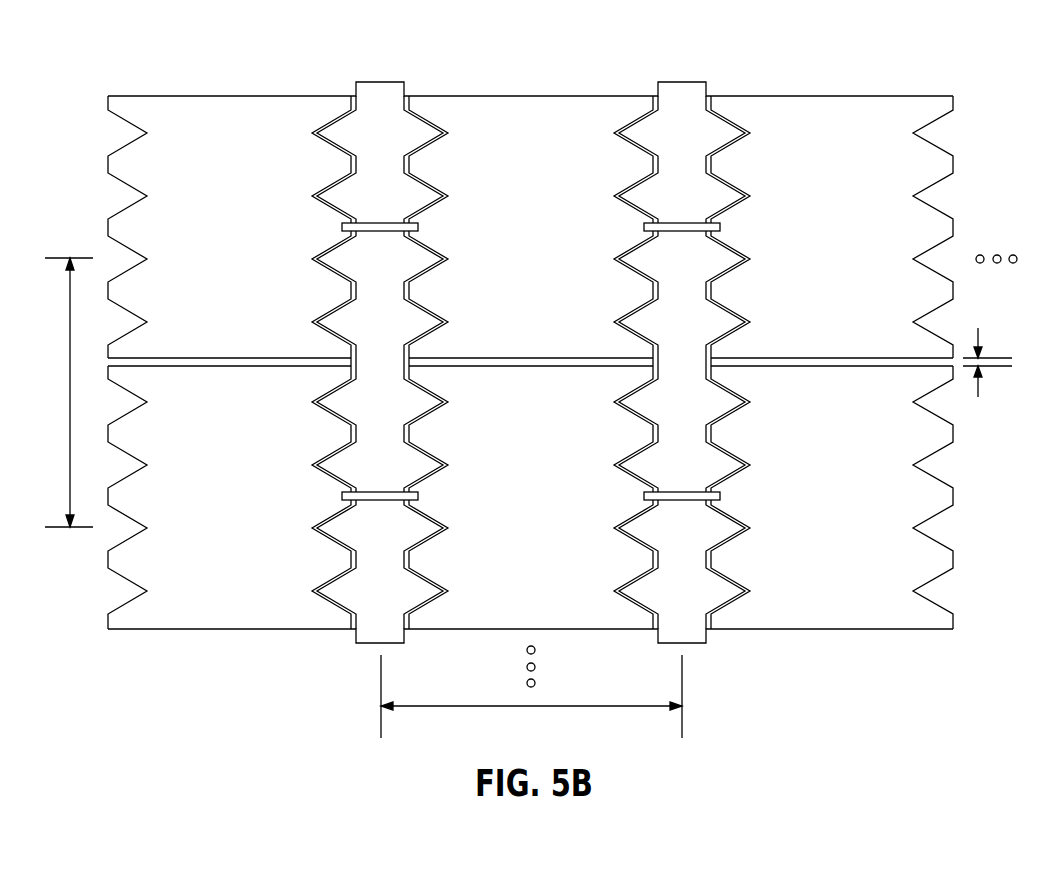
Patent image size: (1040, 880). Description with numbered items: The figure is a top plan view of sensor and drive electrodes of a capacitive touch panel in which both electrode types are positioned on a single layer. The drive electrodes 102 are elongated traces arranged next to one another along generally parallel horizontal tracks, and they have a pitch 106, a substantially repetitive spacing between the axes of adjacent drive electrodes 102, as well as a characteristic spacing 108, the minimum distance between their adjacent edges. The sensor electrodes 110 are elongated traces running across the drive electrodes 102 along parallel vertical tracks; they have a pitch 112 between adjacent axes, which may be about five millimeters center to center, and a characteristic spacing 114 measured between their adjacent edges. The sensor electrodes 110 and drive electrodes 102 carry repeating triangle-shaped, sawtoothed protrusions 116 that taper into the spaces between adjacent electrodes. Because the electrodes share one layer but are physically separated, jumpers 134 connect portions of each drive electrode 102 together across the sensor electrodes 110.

The drive electrode 102 is at (832, 125).
The pitch 106 is at (59, 392).
The characteristic spacing 108 is at (993, 362).
The sensor electrode 110 is at (680, 110).
The pitch 112 is at (531, 696).
The characteristic spacing 114 is at (414, 133).
The protrusion 116 is at (345, 590).
The jumper 134 is at (718, 494).